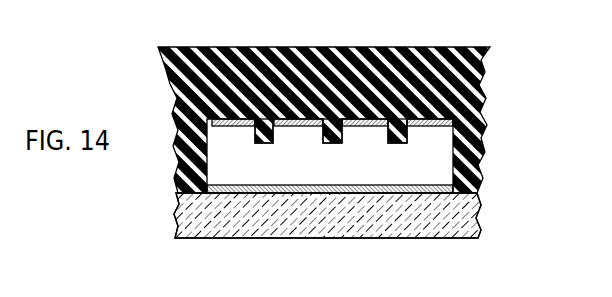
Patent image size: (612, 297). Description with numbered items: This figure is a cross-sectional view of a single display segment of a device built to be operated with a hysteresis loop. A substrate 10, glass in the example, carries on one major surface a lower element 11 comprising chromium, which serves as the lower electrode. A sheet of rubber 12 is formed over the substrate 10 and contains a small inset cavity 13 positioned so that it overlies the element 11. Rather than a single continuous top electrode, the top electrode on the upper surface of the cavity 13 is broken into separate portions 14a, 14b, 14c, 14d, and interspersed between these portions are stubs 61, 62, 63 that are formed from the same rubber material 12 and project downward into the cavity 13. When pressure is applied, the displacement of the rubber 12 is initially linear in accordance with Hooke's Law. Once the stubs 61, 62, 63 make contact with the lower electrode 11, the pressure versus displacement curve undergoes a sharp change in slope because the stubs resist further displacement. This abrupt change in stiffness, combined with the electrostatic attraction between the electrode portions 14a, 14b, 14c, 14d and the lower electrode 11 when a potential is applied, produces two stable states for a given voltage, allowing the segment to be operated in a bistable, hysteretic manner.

The substrate 10 is at (190, 222).
The element 11 is at (462, 219).
The sheet of rubber 12 is at (482, 62).
The cavity 13 is at (442, 178).
The portion of top electrode 14a is at (230, 126).
The portion of top electrode 14b is at (299, 126).
The portion of top electrode 14c is at (363, 126).
The portion of top electrode 14d is at (432, 126).
The stub 61 is at (258, 141).
The stub 62 is at (331, 143).
The stub 63 is at (392, 142).